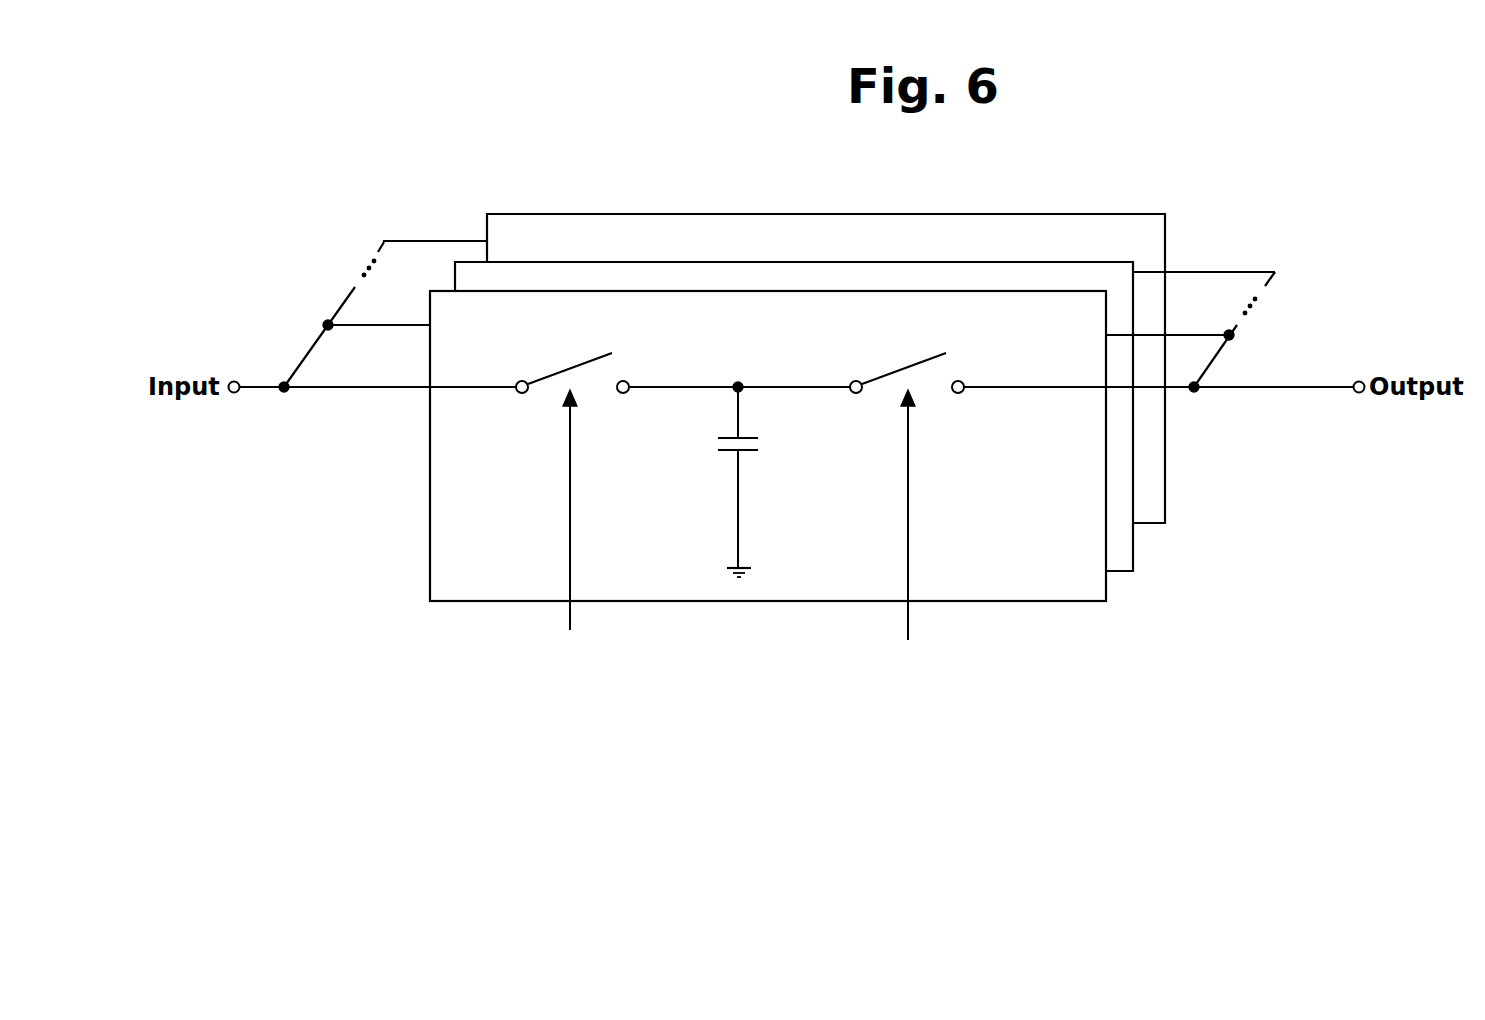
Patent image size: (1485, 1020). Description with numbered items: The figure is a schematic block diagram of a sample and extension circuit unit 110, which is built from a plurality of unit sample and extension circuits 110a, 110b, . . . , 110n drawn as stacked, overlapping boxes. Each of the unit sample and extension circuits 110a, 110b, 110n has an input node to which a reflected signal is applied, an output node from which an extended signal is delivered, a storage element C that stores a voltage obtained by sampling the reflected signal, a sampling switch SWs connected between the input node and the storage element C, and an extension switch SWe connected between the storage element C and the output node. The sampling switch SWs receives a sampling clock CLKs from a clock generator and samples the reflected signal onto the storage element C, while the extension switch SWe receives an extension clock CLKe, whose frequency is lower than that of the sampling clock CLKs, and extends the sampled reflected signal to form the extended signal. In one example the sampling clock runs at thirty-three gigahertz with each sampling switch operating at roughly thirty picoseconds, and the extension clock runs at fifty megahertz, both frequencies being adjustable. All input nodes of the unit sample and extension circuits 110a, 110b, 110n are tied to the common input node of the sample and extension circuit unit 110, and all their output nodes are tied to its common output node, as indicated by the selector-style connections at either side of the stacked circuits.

The sample and extension circuit unit 110 is at (205, 220).
The unit sample and extension circuit 110a is at (1106, 601).
The unit sample and extension circuit 110b is at (1117, 557).
The unit sample and extension circuit 110n is at (1148, 509).
The sampling switch SWs is at (572, 361).
The extension switch SWe is at (907, 361).
The storage element C is at (750, 479).
The sampling clock CLKs is at (577, 529).
The extension clock CLKe is at (915, 535).